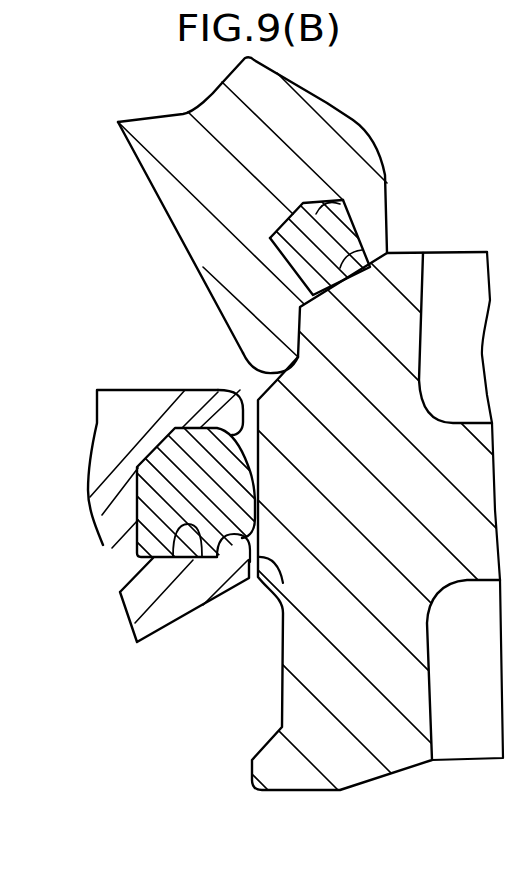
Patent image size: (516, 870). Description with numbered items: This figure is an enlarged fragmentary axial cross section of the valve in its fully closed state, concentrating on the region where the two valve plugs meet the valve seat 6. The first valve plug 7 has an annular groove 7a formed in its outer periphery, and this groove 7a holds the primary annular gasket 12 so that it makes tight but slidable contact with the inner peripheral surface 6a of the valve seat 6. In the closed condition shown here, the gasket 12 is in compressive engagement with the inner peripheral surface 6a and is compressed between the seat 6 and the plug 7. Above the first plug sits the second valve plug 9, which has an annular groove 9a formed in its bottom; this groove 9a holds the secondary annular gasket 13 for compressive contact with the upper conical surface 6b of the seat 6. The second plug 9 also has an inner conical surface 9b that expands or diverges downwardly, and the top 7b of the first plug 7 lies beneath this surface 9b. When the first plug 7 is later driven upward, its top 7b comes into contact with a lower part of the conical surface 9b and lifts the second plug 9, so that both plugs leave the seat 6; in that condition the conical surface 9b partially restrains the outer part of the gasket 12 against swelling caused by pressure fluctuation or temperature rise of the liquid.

The valve seat 6 is at (353, 690).
The inner peripheral surface 6a is at (280, 596).
The upper conical surface 6b is at (387, 238).
The first valve plug 7 is at (157, 592).
The annular groove 7a is at (198, 560).
The top of the plug 7b is at (229, 412).
The second valve plug 9 is at (293, 140).
The annular groove 9a is at (347, 197).
The inner conical surface 9b is at (203, 277).
The primary annular gasket 12 is at (162, 477).
The secondary annular gasket 13 is at (332, 240).